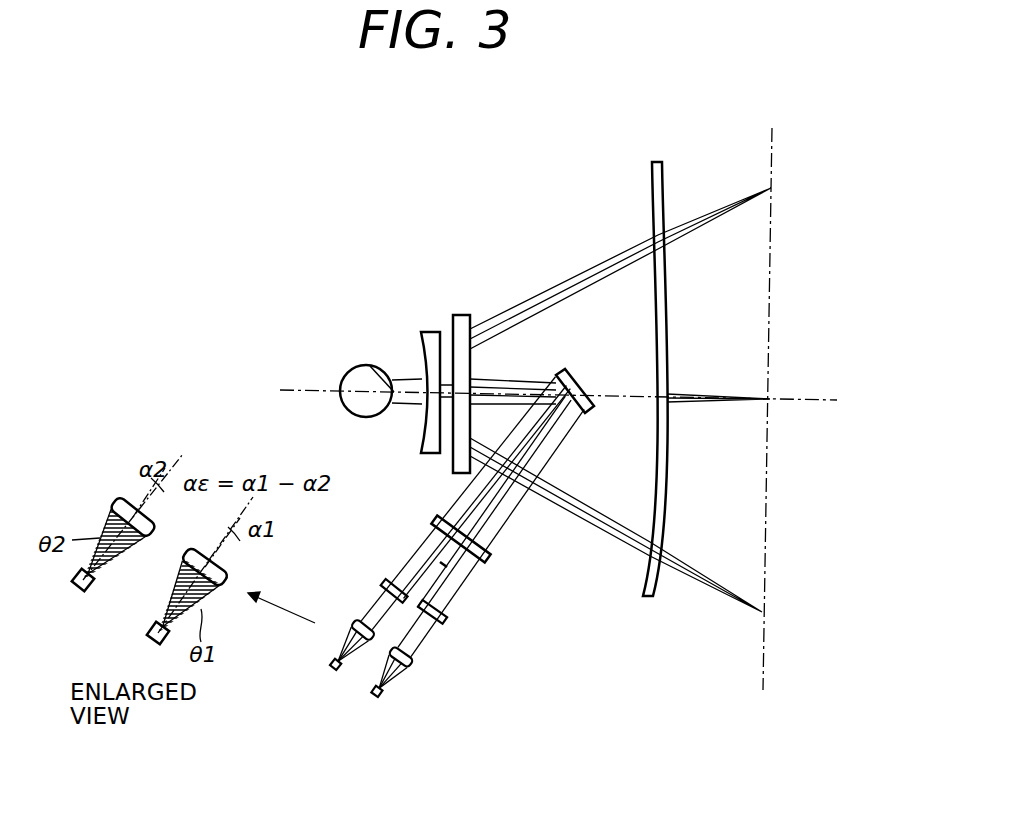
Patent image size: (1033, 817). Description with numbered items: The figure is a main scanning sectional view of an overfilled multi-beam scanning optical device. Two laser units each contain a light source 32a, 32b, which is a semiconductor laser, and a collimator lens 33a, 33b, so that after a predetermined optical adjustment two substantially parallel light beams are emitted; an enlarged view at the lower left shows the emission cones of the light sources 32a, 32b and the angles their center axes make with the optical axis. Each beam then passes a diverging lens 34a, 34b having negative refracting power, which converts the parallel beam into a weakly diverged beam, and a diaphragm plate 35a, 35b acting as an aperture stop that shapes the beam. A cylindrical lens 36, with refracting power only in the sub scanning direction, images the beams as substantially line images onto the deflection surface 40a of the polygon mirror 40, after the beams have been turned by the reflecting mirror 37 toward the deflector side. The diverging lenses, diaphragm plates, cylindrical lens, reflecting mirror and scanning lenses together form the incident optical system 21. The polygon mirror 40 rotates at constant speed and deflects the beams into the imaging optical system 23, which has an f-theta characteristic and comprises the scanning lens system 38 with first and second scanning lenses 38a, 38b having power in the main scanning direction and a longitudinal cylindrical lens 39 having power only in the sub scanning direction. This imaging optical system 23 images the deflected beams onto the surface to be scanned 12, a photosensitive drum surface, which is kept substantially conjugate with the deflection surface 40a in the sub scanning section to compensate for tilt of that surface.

The surface to be scanned 12 is at (775, 141).
The incident optical system 21 is at (592, 243).
The imaging optical system 23 is at (686, 146).
The light source 32a is at (377, 698).
The light source 32b is at (336, 669).
The collimator lens 33a is at (415, 662).
The collimator lens 33b is at (360, 622).
The diverging lens 34a is at (447, 617).
The diverging lens 34b is at (396, 583).
The diaphragm plate 35a is at (472, 584).
The diaphragm plate 35b is at (418, 543).
The cylindrical lens 36 is at (488, 559).
The reflecting mirror 37 is at (578, 373).
The scanning lens system 38 is at (488, 259).
The first scanning lens 38a is at (430, 332).
The second scanning lens 38b is at (462, 315).
The longitudinal cylindrical lens 39 is at (652, 167).
The polygon mirror 40 is at (337, 361).
The deflection surface 40a is at (372, 367).